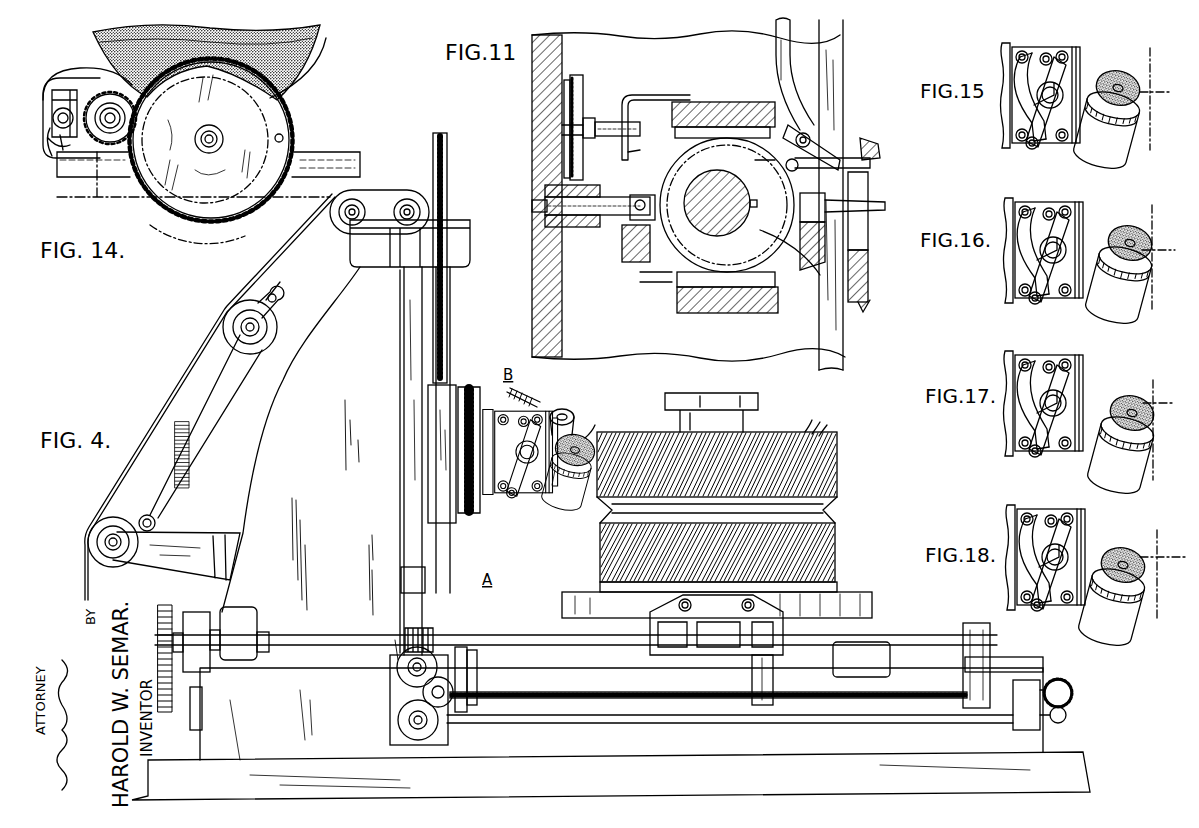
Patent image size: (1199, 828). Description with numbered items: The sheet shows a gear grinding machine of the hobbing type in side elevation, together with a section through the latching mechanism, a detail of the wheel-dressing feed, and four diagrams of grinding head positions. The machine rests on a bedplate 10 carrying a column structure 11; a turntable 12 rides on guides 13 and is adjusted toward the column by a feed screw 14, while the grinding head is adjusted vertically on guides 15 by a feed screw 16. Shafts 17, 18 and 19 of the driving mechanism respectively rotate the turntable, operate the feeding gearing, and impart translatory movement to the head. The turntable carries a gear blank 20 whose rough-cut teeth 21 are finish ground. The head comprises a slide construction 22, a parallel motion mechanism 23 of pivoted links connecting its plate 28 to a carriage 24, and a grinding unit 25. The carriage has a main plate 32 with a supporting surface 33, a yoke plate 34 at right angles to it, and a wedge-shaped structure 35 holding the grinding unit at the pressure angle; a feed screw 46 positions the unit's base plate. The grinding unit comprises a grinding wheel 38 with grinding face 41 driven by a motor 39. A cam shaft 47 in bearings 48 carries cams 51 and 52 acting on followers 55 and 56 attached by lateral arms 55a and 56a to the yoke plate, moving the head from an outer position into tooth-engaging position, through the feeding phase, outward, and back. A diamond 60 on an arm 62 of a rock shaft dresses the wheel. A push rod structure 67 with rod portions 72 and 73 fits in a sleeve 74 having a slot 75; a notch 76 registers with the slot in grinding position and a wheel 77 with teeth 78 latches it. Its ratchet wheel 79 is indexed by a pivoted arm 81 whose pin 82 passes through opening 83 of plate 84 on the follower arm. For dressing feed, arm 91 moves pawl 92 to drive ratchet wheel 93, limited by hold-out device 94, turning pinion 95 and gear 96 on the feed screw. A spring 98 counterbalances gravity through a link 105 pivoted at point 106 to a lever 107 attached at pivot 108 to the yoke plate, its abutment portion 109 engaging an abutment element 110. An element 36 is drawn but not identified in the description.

In FIG. 4, the bedplate 10 is at (611, 763).
In FIG. 4, the column structure 11 is at (283, 442).
In FIG. 4, the turntable 12 is at (872, 604).
In FIG. 4, the guides 13 is at (1000, 660).
In FIG. 4, the feed screw 14 is at (945, 690).
In FIG. 4, the guides 15 is at (450, 550).
In FIG. 4, the feed screw 16 is at (433, 163).
In FIG. 4, the shaft 17 is at (520, 633).
In FIG. 4, the vertical shaft 18 is at (404, 512).
In FIG. 15, the shaft 19 is at (1048, 82).
In FIG. 16, the shaft 19 is at (1053, 237).
In FIG. 17, the shaft 19 is at (1053, 390).
In FIG. 18, the shaft 19 is at (1055, 544).
In FIG. 4, the shaft 19 is at (512, 461).
In FIG. 4, the gear blank 20 is at (835, 490).
In FIG. 4, the rough-cut teeth 21 is at (817, 419).
In FIG. 15, the slide construction 22 is at (1002, 65).
In FIG. 16, the slide construction 22 is at (1005, 207).
In FIG. 17, the slide construction 22 is at (1007, 357).
In FIG. 18, the slide construction 22 is at (1007, 578).
In FIG. 4, the slide construction 22 is at (442, 454).
In FIG. 15, the parallel motion mechanism 23 is at (1035, 122).
In FIG. 16, the parallel motion mechanism 23 is at (1050, 298).
In FIG. 17, the parallel motion mechanism 23 is at (1045, 455).
In FIG. 18, the parallel motion mechanism 23 is at (1052, 610).
In FIG. 4, the parallel motion mechanism 23 is at (524, 468).
In FIG. 15, the carriage 24 is at (1078, 52).
In FIG. 16, the carriage 24 is at (1082, 210).
In FIG. 17, the carriage 24 is at (1083, 380).
In FIG. 18, the carriage 24 is at (1085, 540).
In FIG. 4, the carriage 24 is at (531, 441).
In FIG. 4, the grinding unit 25 is at (569, 496).
In FIG. 11, the plate 28 is at (535, 288).
In FIG. 4, the plate 28 is at (493, 467).
In FIG. 11, the main plate 32 is at (830, 380).
In FIG. 4, the main plate 32 is at (550, 470).
In FIG. 11, the supporting surface 33 is at (844, 42).
In FIG. 11, the yoke plate 34 is at (790, 148).
In FIG. 14, the wedge-shaped structure 35 is at (335, 148).
In FIG. 4, the wedge-shaped structure 35 is at (560, 470).
In FIG. 11, the strip 36 is at (846, 355).
In FIG. 14, the grinding wheel 38 is at (322, 30).
In FIG. 15, the grinding wheel 38 is at (1122, 72).
In FIG. 16, the grinding wheel 38 is at (1130, 226).
In FIG. 17, the grinding wheel 38 is at (1128, 396).
In FIG. 18, the grinding wheel 38 is at (1126, 548).
In FIG. 4, the grinding wheel 38 is at (585, 436).
In FIG. 15, the driving motor 39 is at (1112, 158).
In FIG. 16, the driving motor 39 is at (1112, 310).
In FIG. 17, the driving motor 39 is at (1115, 480).
In FIG. 18, the driving motor 39 is at (1115, 630).
In FIG. 14, the grinding face 41 is at (300, 70).
In FIG. 4, the grinding face 41 is at (593, 423).
In FIG. 14, the feed screw 46 is at (222, 138).
In FIG. 11, the cam shaft 47 is at (715, 175).
In FIG. 15, the bearings 48 is at (1032, 105).
In FIG. 16, the bearings 48 is at (1030, 262).
In FIG. 17, the bearings 48 is at (1040, 418).
In FIG. 18, the bearings 48 is at (1050, 575).
In FIG. 11, the cam 51 is at (792, 255).
In FIG. 11, the cam 52 is at (670, 150).
In FIG. 11, the follower 55 is at (690, 280).
In FIG. 11, the lateral arm 55a is at (740, 313).
In FIG. 11, the follower 56 is at (735, 102).
In FIG. 11, the cam follower arm 56a is at (700, 102).
In FIG. 14, the diamond 60 is at (213, 107).
In FIG. 14, the arm 62 is at (183, 138).
In FIG. 11, the push rod structure 67 is at (656, 281).
In FIG. 11, the rod portion 72 is at (620, 197).
In FIG. 11, the rod portion 73 is at (875, 212).
In FIG. 11, the sleeve 74 is at (575, 215).
In FIG. 11, the slot 75 is at (590, 185).
In FIG. 11, the notch 76 is at (532, 206).
In FIG. 11, the wheel 77 is at (560, 112).
In FIG. 11, the teeth 78 is at (568, 80).
In FIG. 11, the ratchet wheel 79 is at (583, 90).
In FIG. 11, the pivoted arm 81 is at (590, 118).
In FIG. 11, the lateral pin 82 is at (610, 122).
In FIG. 11, the opening 83 is at (643, 151).
In FIG. 11, the plate 84 is at (648, 95).
In FIG. 14, the arm 91 is at (52, 118).
In FIG. 14, the pawl 92 is at (48, 143).
In FIG. 14, the ratchet wheel 93 is at (112, 92).
In FIG. 14, the pawl hold-out device 94 is at (98, 108).
In FIG. 14, the pinion 95 is at (107, 177).
In FIG. 14, the gear 96 is at (150, 216).
In FIG. 4, the gear 96 is at (570, 412).
In FIG. 4, the spring 98 is at (535, 393).
In FIG. 11, the link 105 is at (782, 45).
In FIG. 11, the intermediate point 106 is at (808, 136).
In FIG. 11, the lever 107 is at (830, 152).
In FIG. 11, the pivot 108 is at (790, 170).
In FIG. 11, the abutment portion 109 is at (870, 163).
In FIG. 11, the abutment element 110 is at (878, 148).